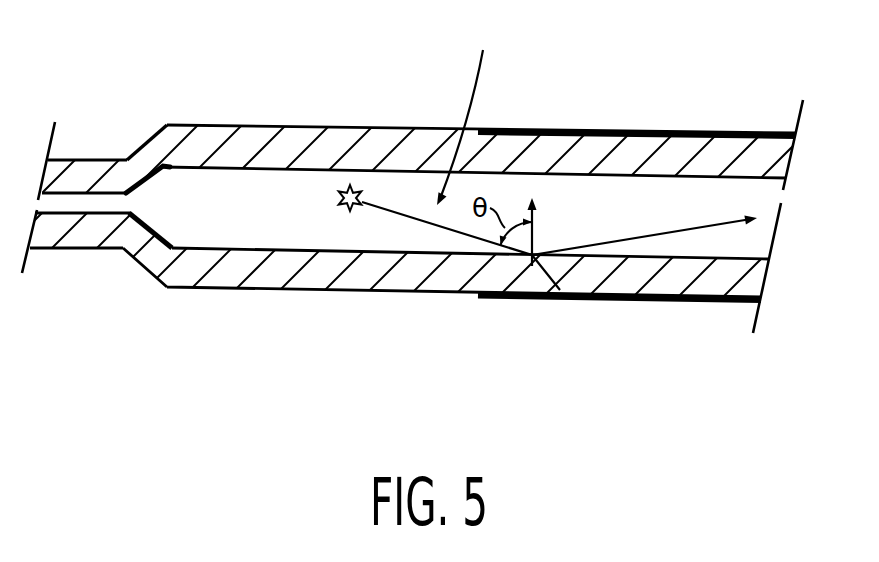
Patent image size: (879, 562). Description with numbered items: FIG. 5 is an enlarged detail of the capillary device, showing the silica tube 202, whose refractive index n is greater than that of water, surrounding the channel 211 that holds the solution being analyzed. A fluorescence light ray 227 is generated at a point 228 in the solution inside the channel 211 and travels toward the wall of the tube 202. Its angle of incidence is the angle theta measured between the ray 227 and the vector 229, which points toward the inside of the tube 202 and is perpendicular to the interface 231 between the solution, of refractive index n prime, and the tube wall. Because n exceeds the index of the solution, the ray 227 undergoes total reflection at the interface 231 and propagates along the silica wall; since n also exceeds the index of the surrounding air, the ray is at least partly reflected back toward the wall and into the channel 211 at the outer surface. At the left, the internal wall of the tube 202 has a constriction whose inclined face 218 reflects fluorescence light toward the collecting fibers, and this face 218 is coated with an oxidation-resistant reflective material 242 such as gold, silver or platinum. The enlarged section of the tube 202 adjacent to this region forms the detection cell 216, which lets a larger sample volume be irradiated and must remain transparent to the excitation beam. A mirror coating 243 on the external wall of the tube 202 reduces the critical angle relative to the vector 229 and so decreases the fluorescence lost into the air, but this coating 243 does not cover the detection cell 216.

The tube 202 is at (290, 127).
The face 218 is at (139, 181).
The oxidation-resistant reflective material 242 is at (163, 172).
The channel 211 is at (597, 197).
The interface 231 is at (230, 250).
The coating 243 is at (657, 300).
The point 228 is at (352, 186).
The fluorescence light ray 227 is at (397, 213).
The vector 229 is at (533, 235).
The detection cell 216 is at (478, 111).